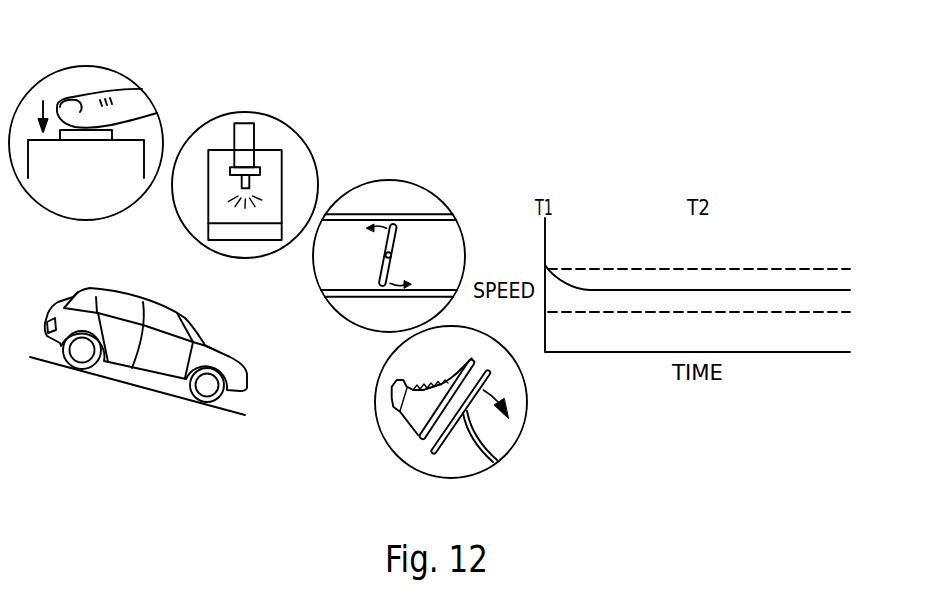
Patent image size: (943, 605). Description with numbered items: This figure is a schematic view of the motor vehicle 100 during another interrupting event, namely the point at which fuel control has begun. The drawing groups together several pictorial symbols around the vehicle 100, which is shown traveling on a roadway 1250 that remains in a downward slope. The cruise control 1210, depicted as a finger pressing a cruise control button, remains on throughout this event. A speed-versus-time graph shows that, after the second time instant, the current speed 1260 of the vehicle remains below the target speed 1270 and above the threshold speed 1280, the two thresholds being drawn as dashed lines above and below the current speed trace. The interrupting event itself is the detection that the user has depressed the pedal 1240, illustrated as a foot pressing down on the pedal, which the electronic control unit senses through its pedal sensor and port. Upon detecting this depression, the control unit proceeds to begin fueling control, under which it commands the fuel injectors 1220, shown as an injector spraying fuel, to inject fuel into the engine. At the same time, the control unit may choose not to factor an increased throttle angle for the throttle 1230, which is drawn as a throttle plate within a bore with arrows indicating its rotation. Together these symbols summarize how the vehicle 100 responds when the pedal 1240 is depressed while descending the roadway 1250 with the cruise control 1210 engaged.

The motor vehicle 100 is at (68, 292).
The cruise control 1210 is at (88, 67).
The fuel injectors 1220 is at (245, 112).
The throttle 1230 is at (386, 180).
The pedal 1240 is at (507, 448).
The roadway 1250 is at (147, 389).
The current speed 1260 is at (755, 290).
The target speed 1270 is at (623, 269).
The threshold speed 1280 is at (752, 312).